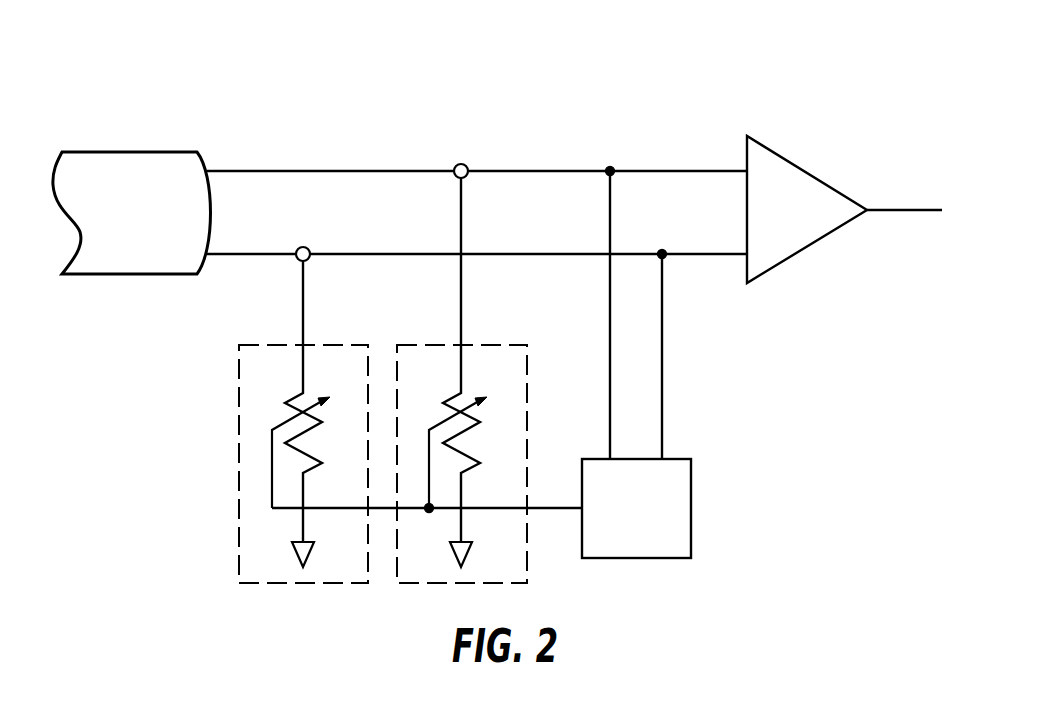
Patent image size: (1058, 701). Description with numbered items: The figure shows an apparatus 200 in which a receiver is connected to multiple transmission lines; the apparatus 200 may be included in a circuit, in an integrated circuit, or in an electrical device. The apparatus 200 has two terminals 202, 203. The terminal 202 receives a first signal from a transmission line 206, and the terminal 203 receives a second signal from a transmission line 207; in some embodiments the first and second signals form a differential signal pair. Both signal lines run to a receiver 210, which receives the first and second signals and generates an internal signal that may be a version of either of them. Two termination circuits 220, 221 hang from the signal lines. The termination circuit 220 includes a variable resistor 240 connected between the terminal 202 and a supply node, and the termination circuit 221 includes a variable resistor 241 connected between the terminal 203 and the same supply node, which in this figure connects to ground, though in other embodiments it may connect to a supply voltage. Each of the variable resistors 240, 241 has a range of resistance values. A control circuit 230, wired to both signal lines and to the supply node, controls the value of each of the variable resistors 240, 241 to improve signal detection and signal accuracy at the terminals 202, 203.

The apparatus 200 is at (800, 75).
The terminal 202 is at (303, 246).
The terminal 203 is at (461, 164).
The transmission line 206 is at (241, 258).
The transmission line 207 is at (246, 170).
The receiver 210 is at (805, 172).
The termination circuit 220 is at (327, 343).
The termination circuit 221 is at (485, 343).
The control circuit 230 is at (692, 508).
The variable resistor 240 is at (308, 436).
The variable resistor 241 is at (466, 436).